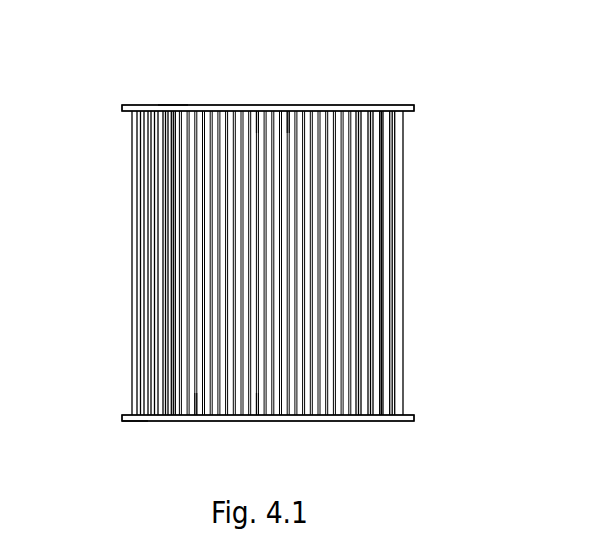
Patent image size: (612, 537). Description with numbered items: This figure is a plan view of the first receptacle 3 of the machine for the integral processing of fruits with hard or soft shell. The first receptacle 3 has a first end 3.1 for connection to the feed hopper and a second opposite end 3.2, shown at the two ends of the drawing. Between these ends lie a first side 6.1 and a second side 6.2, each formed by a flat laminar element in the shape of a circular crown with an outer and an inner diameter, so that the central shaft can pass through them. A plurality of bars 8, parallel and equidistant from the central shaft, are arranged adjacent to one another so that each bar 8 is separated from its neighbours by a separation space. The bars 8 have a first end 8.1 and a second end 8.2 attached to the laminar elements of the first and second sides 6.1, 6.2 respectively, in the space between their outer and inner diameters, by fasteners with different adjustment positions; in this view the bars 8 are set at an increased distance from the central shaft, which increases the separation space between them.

The first receptacle 3 is at (80, 132).
The first end 3.1 is at (406, 410).
The second opposite end 3.2 is at (406, 100).
The first side 6.1 is at (123, 413).
The second side 6.2 is at (165, 97).
The bars 8 is at (347, 258).
The first end of bar 8.1 is at (252, 388).
The second end of bar 8.2 is at (283, 104).